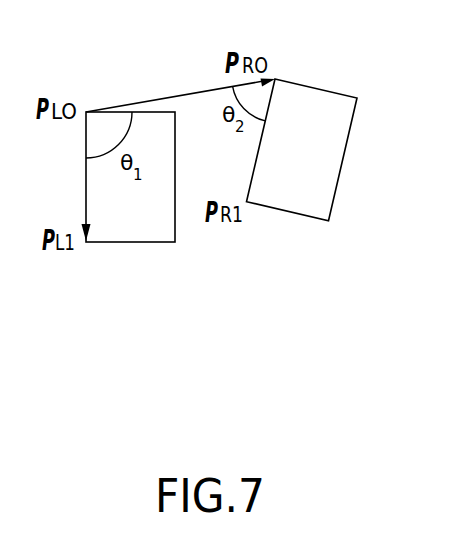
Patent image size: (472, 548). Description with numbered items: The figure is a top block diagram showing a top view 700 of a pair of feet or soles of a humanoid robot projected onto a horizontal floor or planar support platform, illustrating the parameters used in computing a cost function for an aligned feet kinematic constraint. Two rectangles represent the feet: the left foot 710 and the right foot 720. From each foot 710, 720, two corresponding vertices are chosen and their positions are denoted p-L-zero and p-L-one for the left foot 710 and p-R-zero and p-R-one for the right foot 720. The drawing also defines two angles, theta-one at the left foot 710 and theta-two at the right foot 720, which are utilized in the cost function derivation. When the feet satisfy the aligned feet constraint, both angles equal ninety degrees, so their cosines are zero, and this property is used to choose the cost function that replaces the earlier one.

The top view 700 is at (398, 85).
The left foot 710 is at (138, 242).
The right foot 720 is at (307, 218).